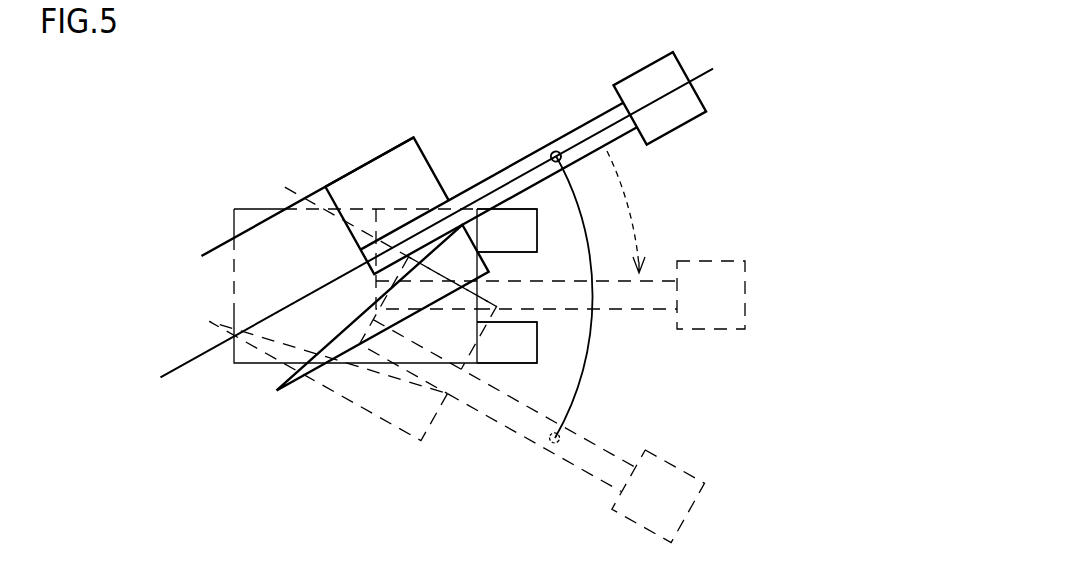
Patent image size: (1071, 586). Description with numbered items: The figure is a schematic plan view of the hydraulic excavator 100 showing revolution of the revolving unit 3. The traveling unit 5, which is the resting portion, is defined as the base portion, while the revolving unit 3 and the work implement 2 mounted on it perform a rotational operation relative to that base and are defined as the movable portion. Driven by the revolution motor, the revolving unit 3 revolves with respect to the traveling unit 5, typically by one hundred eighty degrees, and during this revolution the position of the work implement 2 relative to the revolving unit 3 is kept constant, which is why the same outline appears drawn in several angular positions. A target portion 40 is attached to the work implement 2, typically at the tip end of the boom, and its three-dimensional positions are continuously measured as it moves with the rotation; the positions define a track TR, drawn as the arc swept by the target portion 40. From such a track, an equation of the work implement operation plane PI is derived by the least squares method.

The hydraulic excavator 100 is at (192, 161).
The revolving unit 3 is at (357, 147).
The work implement 2 is at (584, 97).
The target portion 40 is at (549, 156).
The work implement operation plane PI is at (708, 68).
The traveling unit 5 is at (527, 231).
The track TR is at (592, 350).